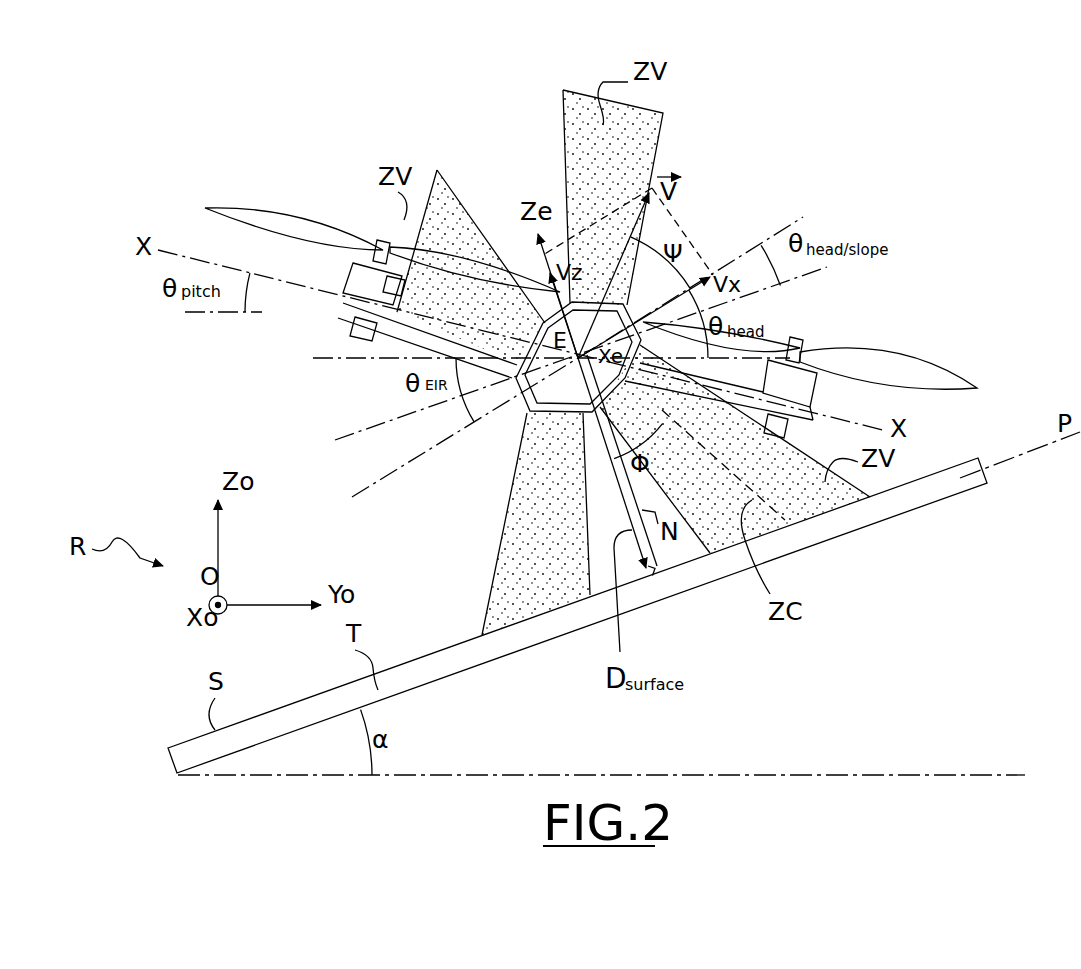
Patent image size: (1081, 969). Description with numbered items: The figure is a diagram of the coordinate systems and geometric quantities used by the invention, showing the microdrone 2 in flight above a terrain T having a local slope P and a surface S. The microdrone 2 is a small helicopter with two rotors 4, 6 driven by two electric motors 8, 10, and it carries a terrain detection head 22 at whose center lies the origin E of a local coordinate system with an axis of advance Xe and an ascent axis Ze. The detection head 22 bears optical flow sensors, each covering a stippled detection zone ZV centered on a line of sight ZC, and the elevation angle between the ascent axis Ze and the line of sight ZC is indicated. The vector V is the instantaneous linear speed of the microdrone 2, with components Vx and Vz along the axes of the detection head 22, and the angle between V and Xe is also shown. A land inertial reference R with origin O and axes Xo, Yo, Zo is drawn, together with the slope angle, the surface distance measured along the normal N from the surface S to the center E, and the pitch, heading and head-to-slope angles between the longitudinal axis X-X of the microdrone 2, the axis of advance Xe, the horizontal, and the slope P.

The microdrone 2 is at (336, 330).
The rotor 4 is at (297, 222).
The rotor 6 is at (905, 368).
The electric motor 8 is at (365, 283).
The electric motor 10 is at (800, 388).
The terrain detection head 22 is at (530, 410).